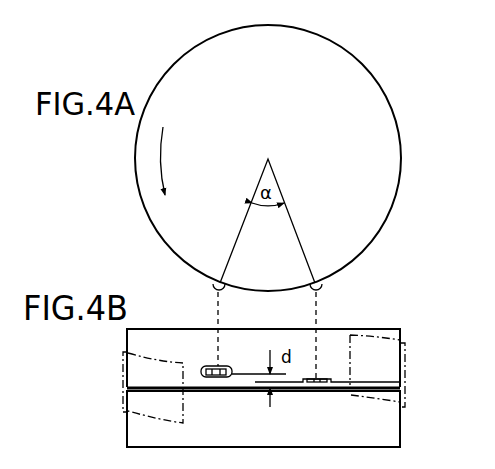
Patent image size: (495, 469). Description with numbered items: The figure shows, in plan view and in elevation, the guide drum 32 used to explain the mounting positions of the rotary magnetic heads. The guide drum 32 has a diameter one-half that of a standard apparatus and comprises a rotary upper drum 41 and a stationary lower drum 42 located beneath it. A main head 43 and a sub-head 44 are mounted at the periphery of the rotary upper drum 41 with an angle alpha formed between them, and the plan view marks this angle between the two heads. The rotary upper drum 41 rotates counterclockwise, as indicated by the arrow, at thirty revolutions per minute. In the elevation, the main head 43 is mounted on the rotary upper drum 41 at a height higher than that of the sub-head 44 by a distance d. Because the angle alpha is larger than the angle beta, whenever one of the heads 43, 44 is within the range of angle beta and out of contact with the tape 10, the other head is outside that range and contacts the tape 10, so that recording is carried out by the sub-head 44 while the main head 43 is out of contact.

In FIG. 4B, the tape 10 is at (405, 367).
In FIG. 4A, the guide drum 32 is at (133, 187).
In FIG. 4B, the guide drum 32 is at (173, 328).
In FIG. 4A, the rotary upper drum 41 is at (397, 139).
In FIG. 4B, the rotary upper drum 41 is at (368, 330).
In FIG. 4B, the stationary lower drum 42 is at (395, 425).
In FIG. 4A, the main head 43 is at (226, 290).
In FIG. 4B, the main head 43 is at (224, 365).
In FIG. 4A, the sub-head 44 is at (322, 287).
In FIG. 4B, the sub-head 44 is at (318, 388).